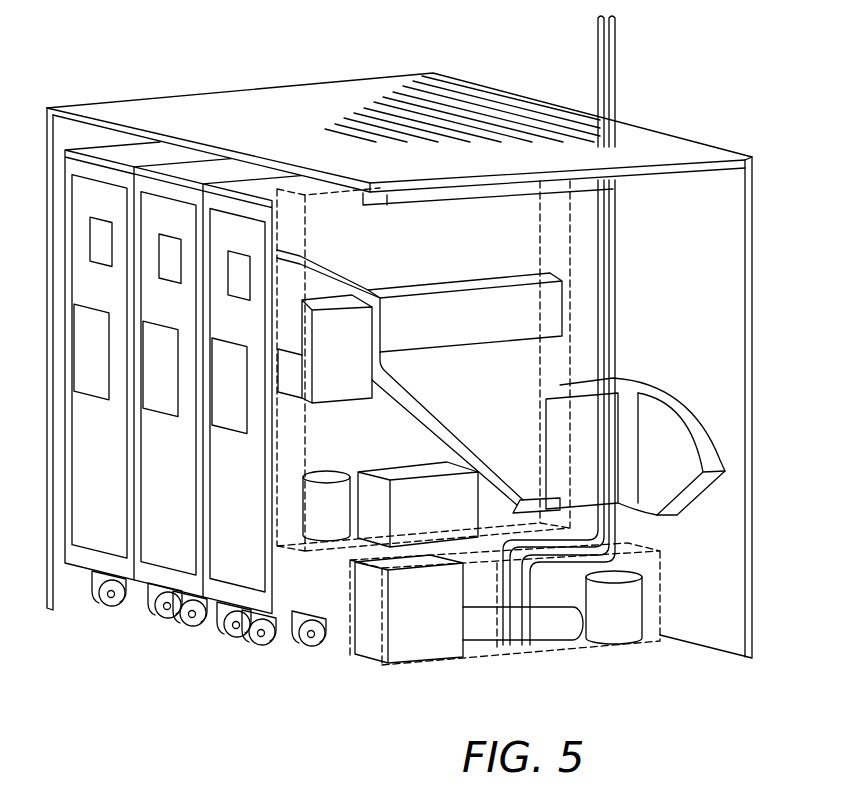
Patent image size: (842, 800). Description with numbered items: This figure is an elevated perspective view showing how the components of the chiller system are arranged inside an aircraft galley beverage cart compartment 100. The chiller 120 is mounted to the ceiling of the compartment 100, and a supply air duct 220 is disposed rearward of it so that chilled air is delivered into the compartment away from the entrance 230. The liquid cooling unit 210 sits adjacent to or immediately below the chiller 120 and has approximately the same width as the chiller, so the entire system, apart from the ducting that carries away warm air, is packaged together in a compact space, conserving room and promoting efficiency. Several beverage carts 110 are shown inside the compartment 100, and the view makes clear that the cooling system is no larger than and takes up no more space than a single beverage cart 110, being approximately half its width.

The aircraft galley beverage cart compartment 100 is at (648, 147).
The beverage cart 110 is at (93, 537).
The chiller 120 is at (286, 200).
The liquid cooling unit 210 is at (356, 665).
The supply air duct 220 is at (693, 420).
The entrance 230 is at (82, 120).